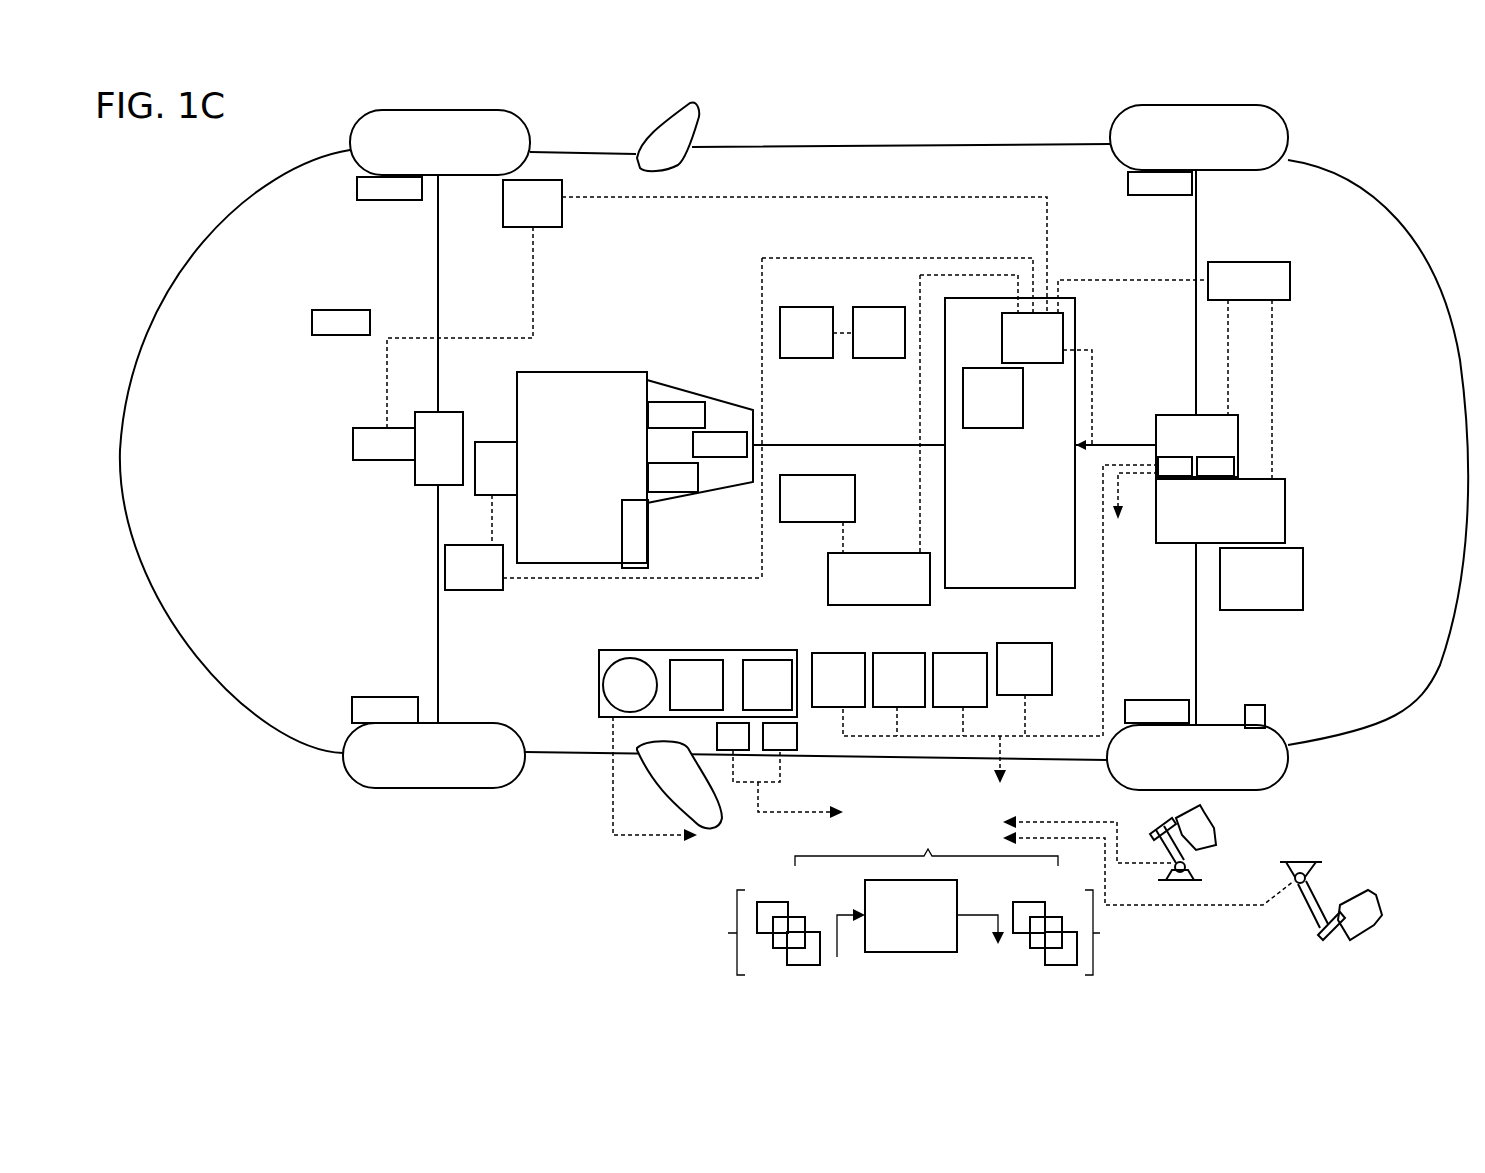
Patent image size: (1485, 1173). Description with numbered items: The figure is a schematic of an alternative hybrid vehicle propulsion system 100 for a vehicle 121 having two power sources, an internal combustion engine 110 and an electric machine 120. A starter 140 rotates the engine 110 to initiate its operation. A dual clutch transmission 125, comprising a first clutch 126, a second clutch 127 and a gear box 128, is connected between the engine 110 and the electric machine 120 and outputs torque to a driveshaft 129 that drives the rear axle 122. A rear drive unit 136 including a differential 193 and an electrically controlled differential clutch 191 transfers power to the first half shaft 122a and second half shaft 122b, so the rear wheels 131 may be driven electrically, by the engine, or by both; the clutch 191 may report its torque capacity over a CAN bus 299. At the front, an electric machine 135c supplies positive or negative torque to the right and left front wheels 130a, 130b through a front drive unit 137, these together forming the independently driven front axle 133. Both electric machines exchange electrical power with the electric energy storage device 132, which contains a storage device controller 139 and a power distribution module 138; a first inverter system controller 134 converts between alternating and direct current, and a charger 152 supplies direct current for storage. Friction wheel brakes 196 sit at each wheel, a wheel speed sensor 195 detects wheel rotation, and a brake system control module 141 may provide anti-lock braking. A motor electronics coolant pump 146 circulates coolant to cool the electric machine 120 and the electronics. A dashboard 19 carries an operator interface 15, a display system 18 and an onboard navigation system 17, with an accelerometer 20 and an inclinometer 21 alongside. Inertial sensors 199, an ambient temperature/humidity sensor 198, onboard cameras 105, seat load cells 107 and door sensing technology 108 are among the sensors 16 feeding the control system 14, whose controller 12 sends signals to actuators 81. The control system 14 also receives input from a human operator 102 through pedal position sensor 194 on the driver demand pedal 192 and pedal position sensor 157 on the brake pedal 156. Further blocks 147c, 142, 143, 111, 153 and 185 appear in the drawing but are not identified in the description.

The vehicle propulsion system 100 is at (935, 120).
The front wheel 130a is at (463, 110).
The front wheel 130b is at (425, 790).
The rear wheels 131 is at (1235, 105).
The vehicle 121 is at (1410, 752).
The front axle 133 is at (425, 522).
The rear axle 122 is at (1234, 246).
The first half shaft 122a is at (1196, 222).
The second half shaft 122b is at (1196, 650).
The friction wheel brakes 196 is at (772, 447).
The controller 147c is at (717, 304).
The motor electronics coolant pump 146 is at (341, 322).
The electric machine 135c is at (384, 444).
The front drive unit 137 is at (439, 448).
The starter 142 is at (496, 493).
The sensor 143 is at (603, 567).
The internal combustion engine 110 is at (582, 467).
The starter 140 is at (622, 510).
The dual clutch transmission 125 is at (668, 386).
The first clutch 126 is at (676, 415).
The gear box 128 is at (720, 444).
The second clutch 127 is at (673, 477).
The driveshaft 129 is at (837, 445).
The sensor 111 is at (816, 332).
The inertial sensors 199 is at (879, 332).
The sensor 153 is at (817, 514).
The charger 152 is at (879, 579).
The electric energy storage device 132 is at (1010, 443).
The power distribution module 138 is at (1105, 365).
The electric energy storage device controller 139 is at (993, 398).
The first inverter system controller 134 is at (1249, 370).
The rear drive unit 136 is at (1197, 446).
The electrically controlled differential clutch 191 is at (1175, 465).
The differential 193 is at (1215, 465).
The electric machine 120 is at (1220, 511).
The brake system control module 141 is at (1261, 579).
The wheel speed sensor 195 is at (1255, 705).
The CAN bus 299 is at (1120, 478).
The dashboard 19 is at (730, 650).
The operator interface 15 is at (630, 685).
The display system 18 is at (696, 685).
The onboard navigation system 17 is at (767, 685).
The inclinometer 21 is at (780, 770).
The accelerometer 20 is at (780, 736).
The ambient temperature/humidity sensor 198 is at (838, 680).
The onboard cameras 105 is at (899, 680).
The seat load cells 107 is at (960, 680).
The door sensing technology 108 is at (1024, 669).
The sensor bus 185 is at (1050, 735).
The control system 14 is at (1044, 854).
The controller 12 is at (920, 918).
The sensors 16 is at (736, 932).
The actuators 81 is at (1101, 932).
The driver demand pedal 192 is at (1163, 848).
The pedal position sensor 194 is at (1190, 866).
The human operator 102 is at (1197, 832).
The pedal position sensor 157 is at (1290, 870).
The brake pedal 156 is at (1321, 929).